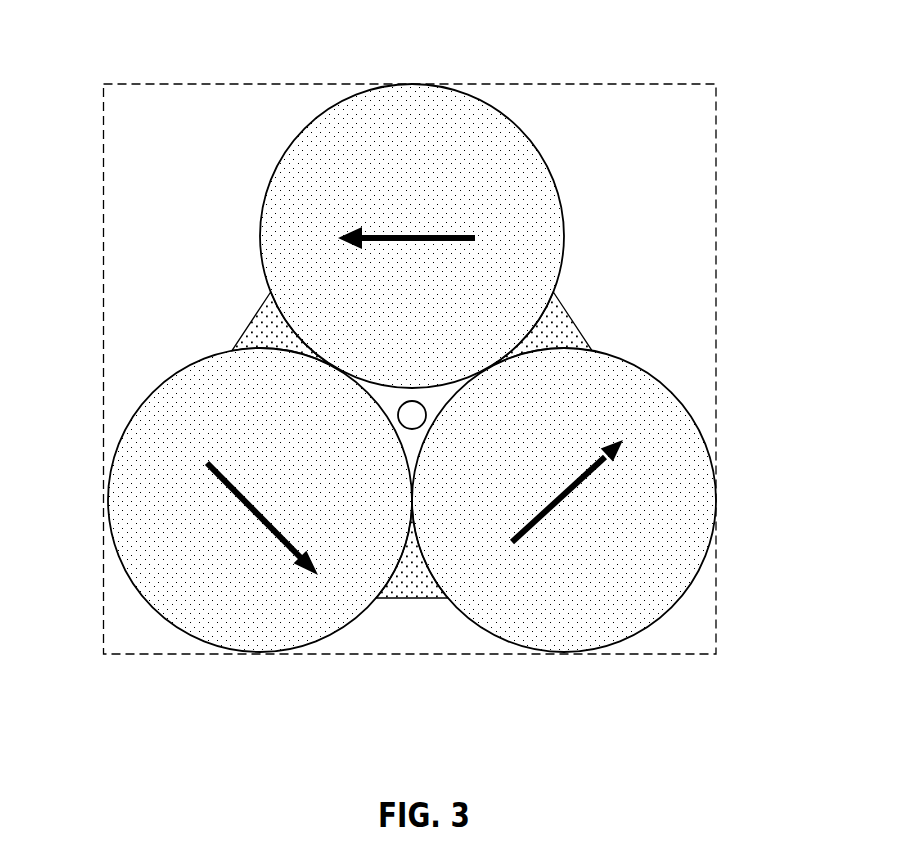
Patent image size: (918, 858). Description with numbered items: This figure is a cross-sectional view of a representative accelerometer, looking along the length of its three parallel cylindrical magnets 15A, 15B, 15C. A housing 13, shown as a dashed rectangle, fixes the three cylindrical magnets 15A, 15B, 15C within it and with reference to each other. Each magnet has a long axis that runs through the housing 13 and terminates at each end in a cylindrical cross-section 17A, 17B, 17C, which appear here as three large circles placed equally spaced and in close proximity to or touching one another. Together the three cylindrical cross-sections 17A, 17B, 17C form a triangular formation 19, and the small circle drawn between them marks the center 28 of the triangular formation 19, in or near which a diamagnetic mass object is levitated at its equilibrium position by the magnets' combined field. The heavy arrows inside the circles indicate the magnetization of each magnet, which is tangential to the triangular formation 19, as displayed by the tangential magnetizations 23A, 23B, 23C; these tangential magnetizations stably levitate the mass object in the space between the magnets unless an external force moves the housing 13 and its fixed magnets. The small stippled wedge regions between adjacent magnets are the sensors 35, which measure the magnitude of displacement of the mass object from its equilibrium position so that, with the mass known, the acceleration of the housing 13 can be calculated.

The housing 13 is at (290, 84).
The cylindrical magnet 15A is at (223, 530).
The cylindrical magnet 15B is at (369, 236).
The cylindrical magnet 15C is at (600, 530).
The cylindrical cross-section 17A is at (285, 425).
The cylindrical cross-section 17B is at (436, 153).
The cylindrical cross-section 17C is at (587, 425).
The triangular formation 19 is at (416, 460).
The tangential magnetization 23A is at (232, 485).
The tangential magnetization 23B is at (410, 246).
The tangential magnetization 23C is at (578, 485).
The center of the triangular formation 28 is at (410, 428).
The sensors 35 is at (262, 327).